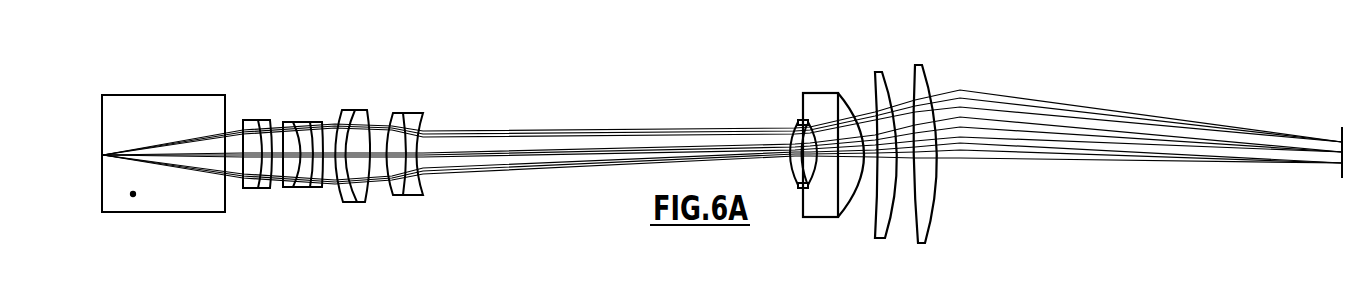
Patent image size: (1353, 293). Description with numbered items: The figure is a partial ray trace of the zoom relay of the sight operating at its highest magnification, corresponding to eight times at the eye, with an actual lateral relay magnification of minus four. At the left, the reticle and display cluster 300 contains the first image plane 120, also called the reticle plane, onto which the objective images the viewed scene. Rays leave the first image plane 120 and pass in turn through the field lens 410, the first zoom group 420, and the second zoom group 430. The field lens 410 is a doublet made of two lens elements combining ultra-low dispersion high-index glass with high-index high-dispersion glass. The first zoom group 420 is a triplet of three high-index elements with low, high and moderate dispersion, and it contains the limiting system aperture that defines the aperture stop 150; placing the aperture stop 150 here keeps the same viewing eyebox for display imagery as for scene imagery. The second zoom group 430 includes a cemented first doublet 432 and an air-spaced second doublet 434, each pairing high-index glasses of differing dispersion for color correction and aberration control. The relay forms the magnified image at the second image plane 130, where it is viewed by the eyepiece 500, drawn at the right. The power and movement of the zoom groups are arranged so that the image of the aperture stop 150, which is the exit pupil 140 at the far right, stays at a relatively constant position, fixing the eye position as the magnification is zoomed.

The first image plane 120 is at (182, 95).
The reticle and display cluster 300 is at (133, 194).
The field lens 410 is at (261, 190).
The first zoom group 420 is at (322, 106).
The aperture stop 150 is at (326, 120).
The second zoom group 430 is at (422, 98).
The first doublet 432 is at (358, 208).
The second doublet 434 is at (434, 130).
The second image plane 130 is at (772, 122).
The eyepiece 500 is at (937, 60).
The exit pupil 140 is at (1332, 130).